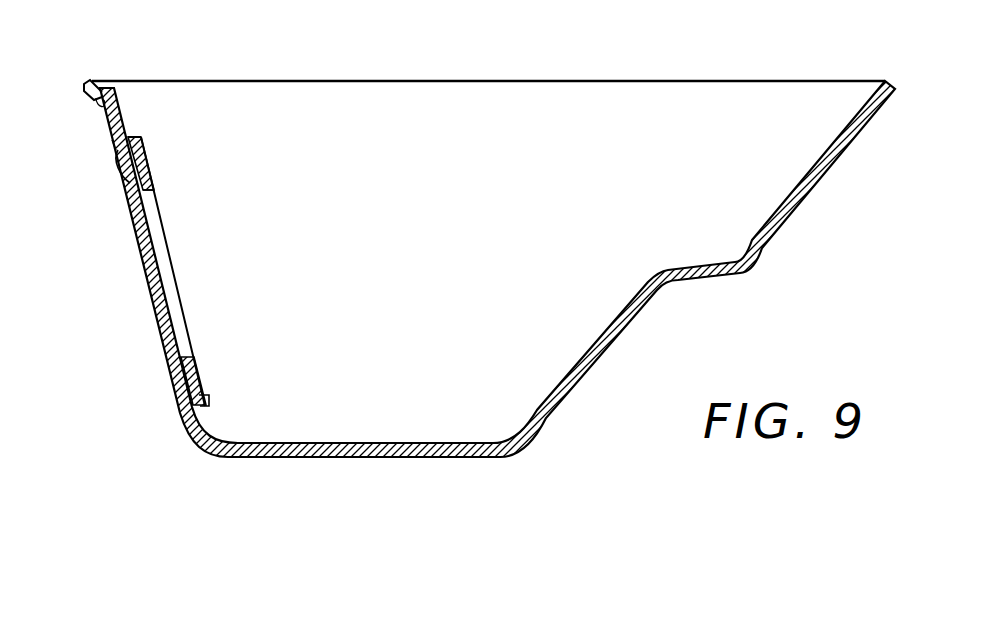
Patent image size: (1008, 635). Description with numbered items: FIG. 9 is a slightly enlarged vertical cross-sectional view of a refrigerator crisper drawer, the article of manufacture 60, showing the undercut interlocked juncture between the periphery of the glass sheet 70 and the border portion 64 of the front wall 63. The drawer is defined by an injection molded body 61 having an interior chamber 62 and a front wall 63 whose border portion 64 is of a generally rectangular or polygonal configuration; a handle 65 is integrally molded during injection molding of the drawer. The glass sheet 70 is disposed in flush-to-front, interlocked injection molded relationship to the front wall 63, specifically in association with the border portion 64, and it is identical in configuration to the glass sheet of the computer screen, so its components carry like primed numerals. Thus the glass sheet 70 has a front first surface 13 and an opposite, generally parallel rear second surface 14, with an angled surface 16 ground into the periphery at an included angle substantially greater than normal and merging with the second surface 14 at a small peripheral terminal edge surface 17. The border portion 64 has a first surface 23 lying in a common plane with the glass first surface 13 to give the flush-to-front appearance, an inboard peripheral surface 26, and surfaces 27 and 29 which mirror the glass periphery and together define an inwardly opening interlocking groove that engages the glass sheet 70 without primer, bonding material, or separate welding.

The article of manufacture 60 is at (682, 30).
The injection molded body 61 is at (600, 350).
The interior chamber 62 is at (482, 282).
The front wall 63 is at (116, 102).
The border portion 64 is at (117, 178).
The handle 65 is at (86, 80).
The glass sheet 70 is at (150, 323).
The first surface 13 is at (146, 262).
The second surface 14 is at (165, 280).
The angled surface 16 is at (182, 397).
The peripheral terminal edge surface 17 is at (208, 398).
The first surface 23 is at (128, 186).
The inboard peripheral surface 26 is at (153, 196).
The frame surface mirroring glass surface 27 is at (182, 358).
The frame surface mirroring glass peripheral surface 29 is at (150, 168).